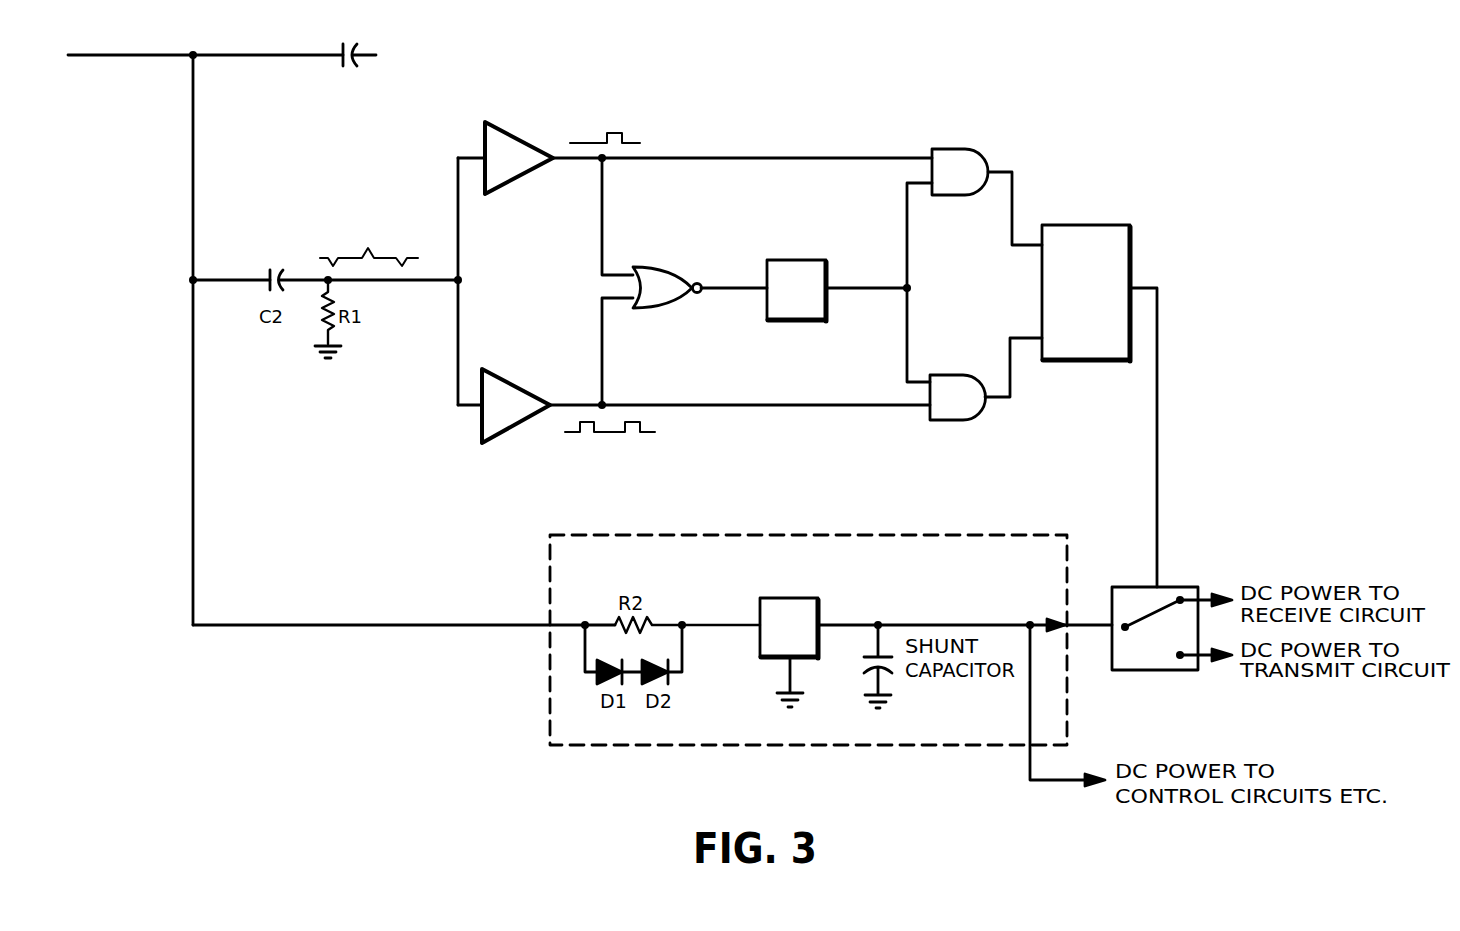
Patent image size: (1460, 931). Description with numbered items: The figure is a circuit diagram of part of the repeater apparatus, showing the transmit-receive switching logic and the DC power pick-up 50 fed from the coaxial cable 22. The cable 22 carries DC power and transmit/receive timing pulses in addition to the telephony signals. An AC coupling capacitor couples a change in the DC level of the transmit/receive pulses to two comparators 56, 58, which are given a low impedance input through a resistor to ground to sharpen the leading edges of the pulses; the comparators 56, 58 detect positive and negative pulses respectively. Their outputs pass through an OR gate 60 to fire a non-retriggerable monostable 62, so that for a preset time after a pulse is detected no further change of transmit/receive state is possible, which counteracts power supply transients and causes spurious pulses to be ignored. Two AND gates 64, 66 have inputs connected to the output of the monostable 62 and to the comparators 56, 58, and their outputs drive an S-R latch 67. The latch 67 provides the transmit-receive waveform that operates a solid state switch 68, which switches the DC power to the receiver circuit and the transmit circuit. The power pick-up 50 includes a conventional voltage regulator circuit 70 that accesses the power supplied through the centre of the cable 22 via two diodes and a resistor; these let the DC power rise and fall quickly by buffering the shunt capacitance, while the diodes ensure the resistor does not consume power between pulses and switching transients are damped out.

The cable 22 is at (123, 58).
The comparator 56 is at (525, 175).
The comparator 58 is at (513, 378).
The OR gate 60 is at (648, 309).
The non-retriggerable monostable 62 is at (795, 323).
The AND gate 64 is at (958, 196).
The AND gate 66 is at (952, 373).
The S-R latch 67 is at (1095, 362).
The solid state switch 68 is at (1157, 672).
The voltage regulator circuit 70 is at (758, 643).
The power pick-up 50 is at (815, 748).